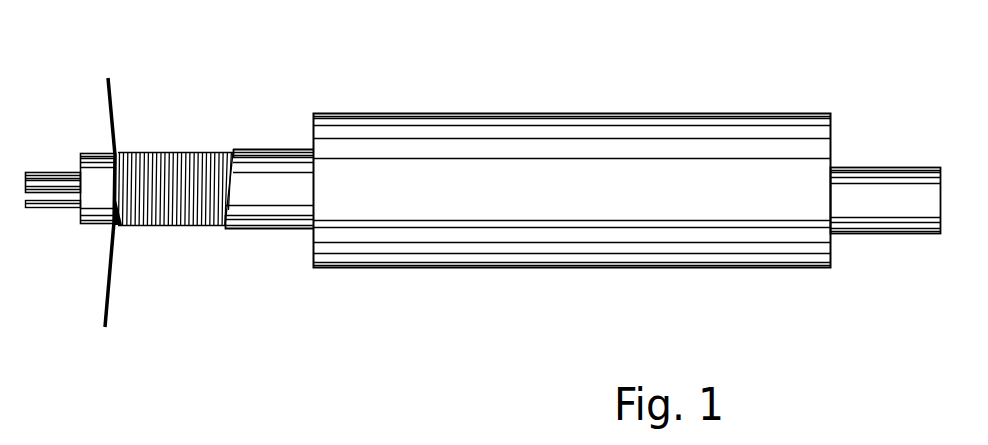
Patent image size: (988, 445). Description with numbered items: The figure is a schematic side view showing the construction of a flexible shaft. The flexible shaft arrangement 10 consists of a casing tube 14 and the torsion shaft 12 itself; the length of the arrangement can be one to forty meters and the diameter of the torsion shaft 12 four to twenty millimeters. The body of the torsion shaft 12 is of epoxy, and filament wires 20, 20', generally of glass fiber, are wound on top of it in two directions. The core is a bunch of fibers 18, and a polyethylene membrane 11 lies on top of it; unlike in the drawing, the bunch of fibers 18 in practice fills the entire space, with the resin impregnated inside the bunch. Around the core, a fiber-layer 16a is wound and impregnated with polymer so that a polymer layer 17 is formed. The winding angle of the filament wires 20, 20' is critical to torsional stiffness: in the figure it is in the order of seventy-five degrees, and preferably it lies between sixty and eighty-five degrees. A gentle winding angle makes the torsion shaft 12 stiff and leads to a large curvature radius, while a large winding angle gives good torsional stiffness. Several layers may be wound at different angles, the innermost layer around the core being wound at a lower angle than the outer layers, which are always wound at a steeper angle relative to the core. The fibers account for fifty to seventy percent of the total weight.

The flexible shaft arrangement 10 is at (480, 330).
The polyethylene membrane 11 is at (97, 195).
The torsion shaft 12 is at (259, 283).
The casing tube 14 is at (575, 170).
The fiber-layer 16a is at (190, 160).
The first polymer layer 17 is at (280, 155).
The bunch of fibers 18 is at (46, 172).
The filament wire 20 is at (147, 139).
The filament wire 20' is at (163, 261).